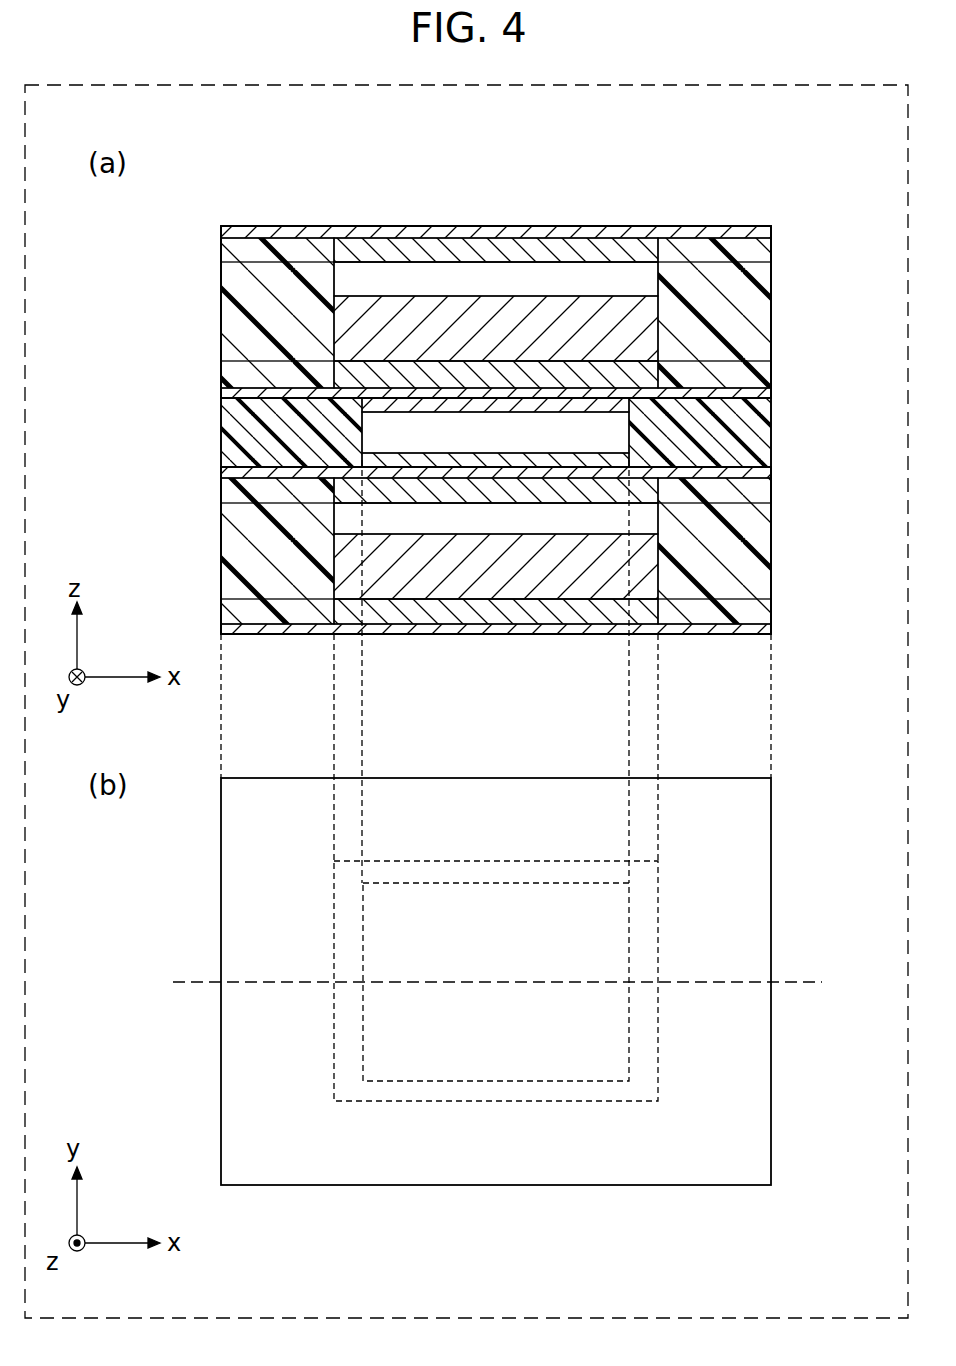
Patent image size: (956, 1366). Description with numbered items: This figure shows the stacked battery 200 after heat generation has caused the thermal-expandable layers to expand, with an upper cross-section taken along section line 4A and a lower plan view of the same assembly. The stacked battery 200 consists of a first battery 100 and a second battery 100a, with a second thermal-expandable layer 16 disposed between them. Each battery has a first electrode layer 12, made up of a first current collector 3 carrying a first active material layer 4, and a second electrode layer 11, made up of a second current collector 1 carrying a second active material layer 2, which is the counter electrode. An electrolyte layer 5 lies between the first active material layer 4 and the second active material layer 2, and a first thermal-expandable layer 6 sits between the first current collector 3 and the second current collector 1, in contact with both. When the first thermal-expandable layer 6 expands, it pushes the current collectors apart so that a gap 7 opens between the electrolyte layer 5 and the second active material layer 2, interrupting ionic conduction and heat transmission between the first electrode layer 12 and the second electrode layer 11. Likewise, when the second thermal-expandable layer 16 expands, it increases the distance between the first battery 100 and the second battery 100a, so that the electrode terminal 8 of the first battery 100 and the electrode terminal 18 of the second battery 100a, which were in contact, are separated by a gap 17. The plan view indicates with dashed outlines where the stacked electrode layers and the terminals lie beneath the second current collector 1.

The first substrate / base layer 1 is at (771, 231).
The first electrode layer 2 is at (648, 243).
The second substrate layer 3 is at (757, 392).
The second electrode layer 4 is at (645, 373).
The piezoelectric / functional layer 5 is at (645, 338).
The spacer / support member 6 is at (295, 248).
The cavity / gap 7 is at (634, 288).
The lead-out portion 8 is at (360, 403).
The first laminate portion 11 is at (838, 180).
The second laminate portion 12 is at (838, 328).
The intermediate support member 16 is at (243, 437).
The intermediate layer 17 is at (643, 435).
The intermediate cavity 18 is at (363, 460).
The first element unit 100 is at (170, 227).
The second element unit 100a is at (170, 468).
The stacked device 200 is at (712, 168).
The section line 4A is at (822, 996).